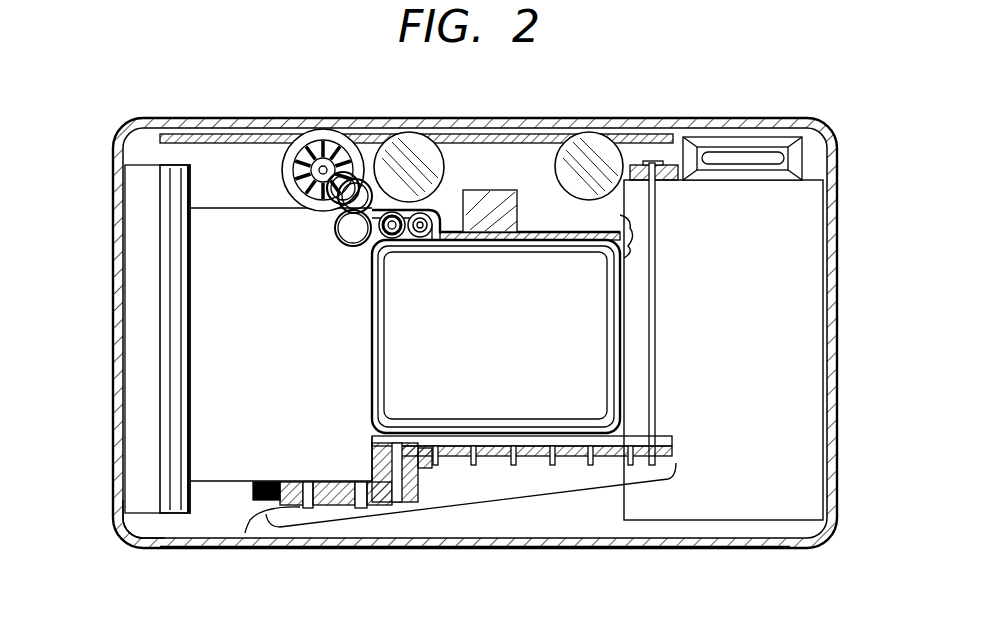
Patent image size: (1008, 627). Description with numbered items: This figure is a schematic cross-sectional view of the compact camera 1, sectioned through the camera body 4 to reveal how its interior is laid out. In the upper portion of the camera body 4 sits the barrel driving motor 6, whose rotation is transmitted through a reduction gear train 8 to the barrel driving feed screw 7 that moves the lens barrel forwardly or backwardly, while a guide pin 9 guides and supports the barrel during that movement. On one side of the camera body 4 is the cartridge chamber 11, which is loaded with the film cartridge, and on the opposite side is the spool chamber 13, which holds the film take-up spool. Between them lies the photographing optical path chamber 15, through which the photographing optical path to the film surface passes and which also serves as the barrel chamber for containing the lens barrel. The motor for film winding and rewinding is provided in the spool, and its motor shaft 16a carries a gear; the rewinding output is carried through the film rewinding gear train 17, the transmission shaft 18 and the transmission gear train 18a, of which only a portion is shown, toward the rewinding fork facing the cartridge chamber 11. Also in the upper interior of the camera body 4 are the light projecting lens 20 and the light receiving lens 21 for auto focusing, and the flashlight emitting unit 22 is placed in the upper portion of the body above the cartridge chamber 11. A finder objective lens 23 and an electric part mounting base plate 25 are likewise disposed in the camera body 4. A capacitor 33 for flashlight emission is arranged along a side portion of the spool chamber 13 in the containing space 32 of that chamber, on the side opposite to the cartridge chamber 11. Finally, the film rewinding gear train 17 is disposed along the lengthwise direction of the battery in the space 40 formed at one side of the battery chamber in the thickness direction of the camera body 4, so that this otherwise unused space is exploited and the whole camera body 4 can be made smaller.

The camera 1 is at (256, 101).
The camera body 4 is at (131, 118).
The barrel driving motor 6 is at (350, 136).
The barrel driving feed screw 7 is at (396, 240).
The reduction gear train 8 is at (312, 216).
The guide pin 9 is at (422, 240).
The cartridge chamber 11 is at (770, 502).
The spool chamber 13 is at (207, 472).
The photographing optical path chamber 15 is at (503, 357).
The motor shaft 16a is at (248, 508).
The film rewinding gear train 17 is at (465, 500).
The transmission shaft 18 is at (658, 250).
The transmission gear train 18a is at (665, 155).
The light projecting lens 20 is at (417, 132).
The light receiving lens 21 is at (586, 132).
The flashlight emitting unit 22 is at (733, 143).
The finder objective lens 23 is at (490, 190).
The electric part mounting base plate 25 is at (645, 124).
The containing space 32 is at (150, 530).
The capacitor 33 is at (133, 188).
The space 40 is at (590, 530).